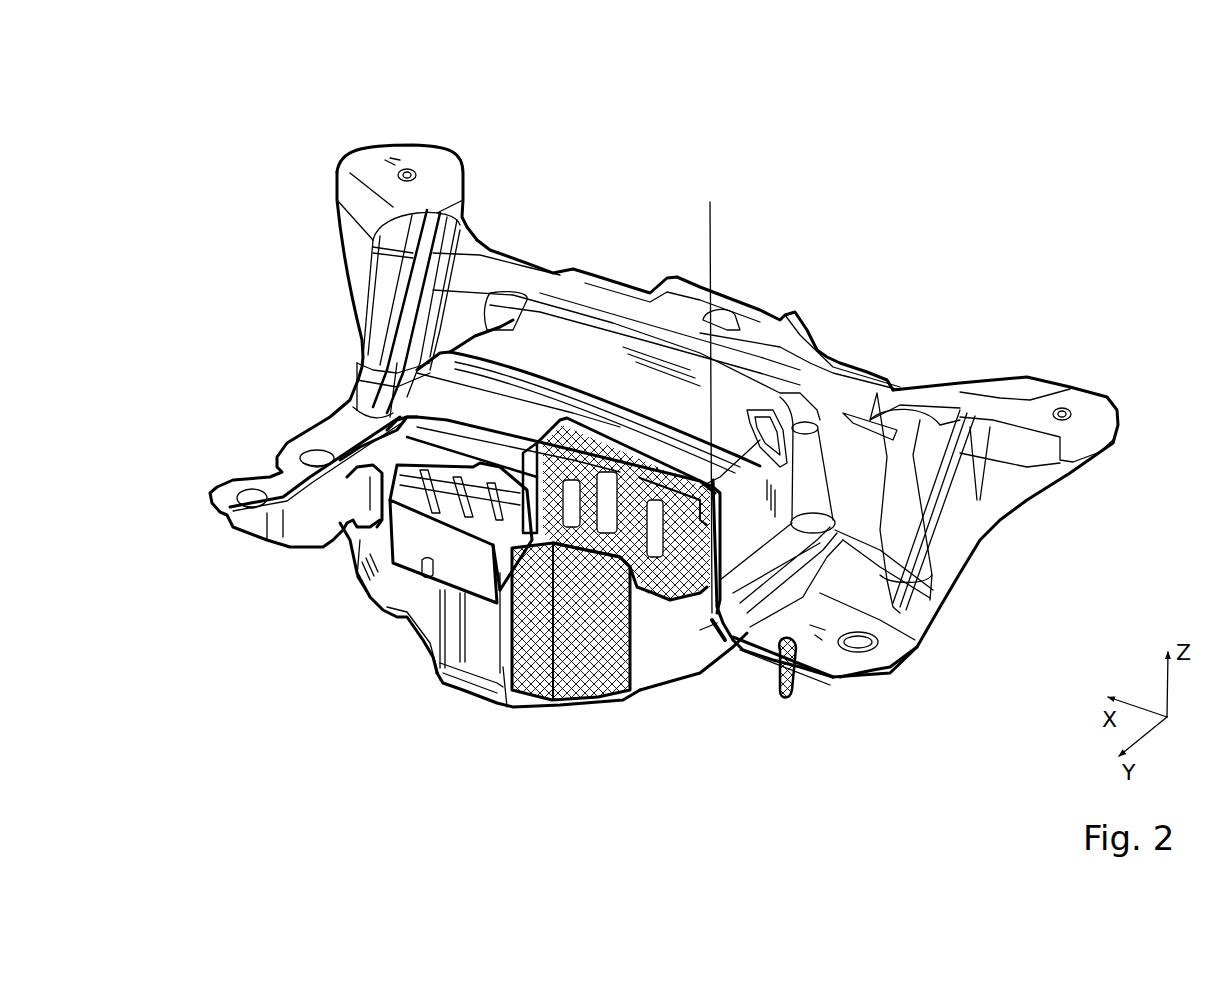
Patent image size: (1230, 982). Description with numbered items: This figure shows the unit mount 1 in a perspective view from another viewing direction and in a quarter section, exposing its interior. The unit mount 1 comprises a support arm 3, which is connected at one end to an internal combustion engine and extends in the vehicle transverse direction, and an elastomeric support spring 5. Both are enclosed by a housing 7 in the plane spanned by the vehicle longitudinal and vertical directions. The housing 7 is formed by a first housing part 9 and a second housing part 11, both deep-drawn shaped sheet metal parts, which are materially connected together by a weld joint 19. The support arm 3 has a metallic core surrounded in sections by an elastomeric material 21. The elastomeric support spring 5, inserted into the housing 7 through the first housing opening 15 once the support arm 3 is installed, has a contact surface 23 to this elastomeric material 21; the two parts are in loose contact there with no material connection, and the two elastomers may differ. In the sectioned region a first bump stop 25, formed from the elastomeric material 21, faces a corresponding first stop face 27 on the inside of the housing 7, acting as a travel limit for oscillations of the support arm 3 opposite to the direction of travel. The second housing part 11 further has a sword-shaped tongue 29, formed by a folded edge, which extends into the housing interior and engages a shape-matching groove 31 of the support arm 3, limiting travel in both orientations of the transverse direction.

The unit mount 1 is at (876, 203).
The support arm 3 is at (487, 570).
The elastomeric support spring 5 is at (583, 655).
The housing 7 is at (518, 255).
The first housing part 9 is at (640, 655).
The second housing part 11 is at (903, 400).
The first housing opening 15 is at (503, 650).
The weld joint 19 is at (722, 658).
The elastomeric material 21 is at (625, 462).
The contact surface 23 is at (480, 603).
The first bump stop 25 is at (721, 645).
The first stop face 27 is at (697, 240).
The sword-shaped tongue 29 is at (425, 445).
The groove 31 is at (440, 478).